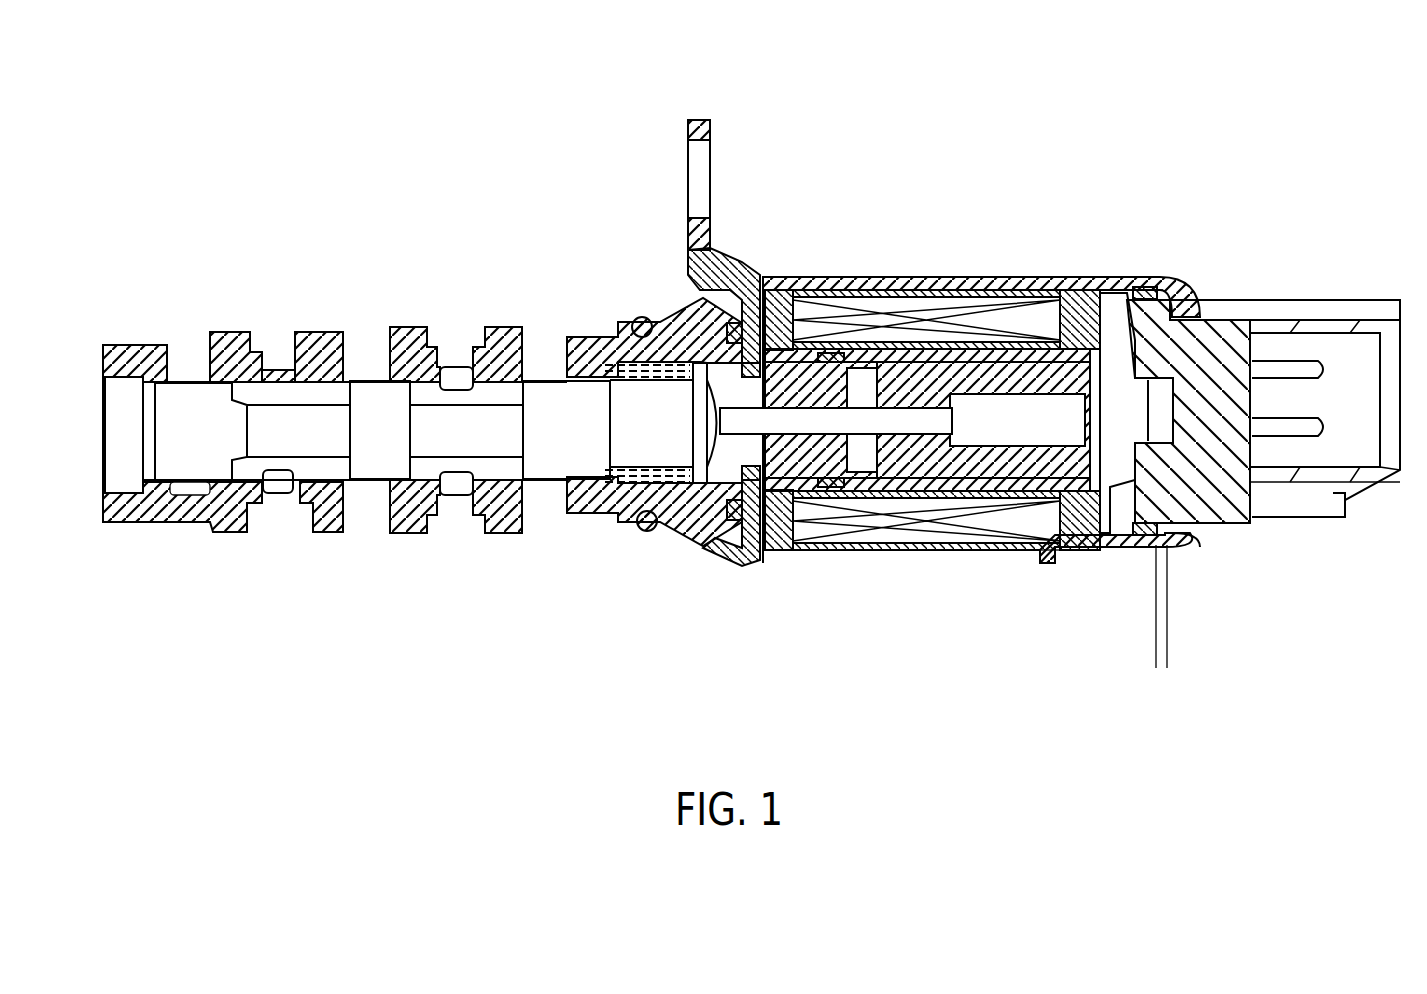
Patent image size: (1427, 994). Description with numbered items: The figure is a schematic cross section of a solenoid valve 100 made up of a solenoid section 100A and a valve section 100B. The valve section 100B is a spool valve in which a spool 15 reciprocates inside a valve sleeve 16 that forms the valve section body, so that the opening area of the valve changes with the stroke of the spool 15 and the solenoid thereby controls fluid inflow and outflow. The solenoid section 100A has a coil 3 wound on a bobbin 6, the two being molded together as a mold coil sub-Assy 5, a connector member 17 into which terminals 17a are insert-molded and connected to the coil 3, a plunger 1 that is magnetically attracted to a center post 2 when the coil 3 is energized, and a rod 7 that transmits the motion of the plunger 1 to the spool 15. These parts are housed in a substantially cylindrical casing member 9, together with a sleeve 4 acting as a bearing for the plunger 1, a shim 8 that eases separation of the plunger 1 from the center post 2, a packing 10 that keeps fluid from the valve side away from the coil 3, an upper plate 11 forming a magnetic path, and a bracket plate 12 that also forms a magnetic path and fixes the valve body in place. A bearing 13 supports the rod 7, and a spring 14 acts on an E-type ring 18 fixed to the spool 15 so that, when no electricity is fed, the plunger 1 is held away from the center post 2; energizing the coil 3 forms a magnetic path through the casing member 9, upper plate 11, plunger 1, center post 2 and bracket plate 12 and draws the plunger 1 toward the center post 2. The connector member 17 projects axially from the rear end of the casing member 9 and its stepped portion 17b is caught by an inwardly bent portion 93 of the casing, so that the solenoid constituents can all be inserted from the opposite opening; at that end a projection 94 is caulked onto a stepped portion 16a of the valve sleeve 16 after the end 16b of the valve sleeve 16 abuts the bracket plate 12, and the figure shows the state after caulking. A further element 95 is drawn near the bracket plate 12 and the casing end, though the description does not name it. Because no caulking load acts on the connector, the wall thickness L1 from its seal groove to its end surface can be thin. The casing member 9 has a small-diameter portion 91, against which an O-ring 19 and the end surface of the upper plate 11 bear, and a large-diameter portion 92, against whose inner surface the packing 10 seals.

The solenoid valve 100 is at (305, 180).
The solenoid section 100A is at (968, 170).
The valve section 100B is at (508, 258).
The plunger 1 is at (972, 563).
The center post 2 is at (815, 330).
The coil 3 is at (973, 300).
The sleeve 4 is at (935, 488).
The mold coil sub-Assy 5 is at (930, 290).
The bobbin 6 is at (1012, 330).
The rod 7 is at (757, 555).
The shim 8 is at (822, 552).
The casing member 9 is at (1018, 570).
The packing 10 is at (773, 300).
The upper plate 11 is at (1113, 548).
The bracket plate 12 is at (752, 262).
The bearing 13 is at (690, 535).
The spring 14 is at (598, 488).
The spool 15 is at (203, 393).
The valve sleeve 16 is at (328, 382).
The stepped portion 16a is at (688, 550).
The end of the valve sleeve 16b is at (708, 273).
The connector member 17 is at (1294, 460).
The terminals 17a is at (1288, 361).
The stepped portion 17b is at (1207, 298).
The E-type ring 18 is at (693, 317).
The O-ring 19 is at (1142, 288).
The small-diameter portion 91 is at (1087, 550).
The large-diameter portion 92 is at (853, 563).
The bent portion 93 is at (1192, 540).
The projection 94 is at (718, 553).
The seal 95 is at (762, 300).
The wall thickness L1 is at (1128, 662).